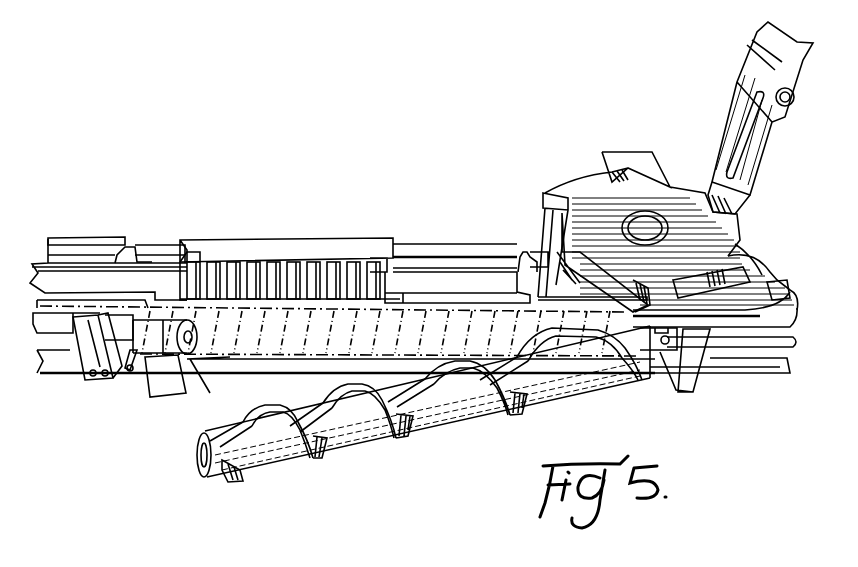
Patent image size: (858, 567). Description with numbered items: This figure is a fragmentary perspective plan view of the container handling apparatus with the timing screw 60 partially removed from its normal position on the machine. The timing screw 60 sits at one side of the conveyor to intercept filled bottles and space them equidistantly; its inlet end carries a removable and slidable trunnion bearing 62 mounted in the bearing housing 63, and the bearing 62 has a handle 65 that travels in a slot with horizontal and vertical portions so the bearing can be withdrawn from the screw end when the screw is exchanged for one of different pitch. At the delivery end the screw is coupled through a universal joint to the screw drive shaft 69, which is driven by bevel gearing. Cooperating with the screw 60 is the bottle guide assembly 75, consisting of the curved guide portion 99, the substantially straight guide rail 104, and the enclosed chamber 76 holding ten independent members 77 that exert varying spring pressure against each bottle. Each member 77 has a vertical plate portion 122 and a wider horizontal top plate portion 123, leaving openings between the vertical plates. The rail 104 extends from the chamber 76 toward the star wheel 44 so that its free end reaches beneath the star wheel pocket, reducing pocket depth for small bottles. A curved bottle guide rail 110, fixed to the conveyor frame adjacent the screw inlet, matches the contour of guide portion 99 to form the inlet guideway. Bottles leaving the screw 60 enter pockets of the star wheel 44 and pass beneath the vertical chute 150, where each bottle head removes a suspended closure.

The bottle guide assembly 75 is at (49, 273).
The curved guide portion 99 is at (86, 270).
The vertical plate portion 122 is at (190, 285).
The independent members 77 is at (200, 260).
The horizontal top plate portion 123 is at (258, 260).
The enclosed chamber 76 is at (300, 245).
The guide rail 104 is at (479, 289).
The star wheel 44 is at (699, 237).
The vertical chute 150 is at (758, 161).
The curved bottle guide rail 110 is at (66, 328).
The trunnion bearing 62 is at (113, 337).
The bearing housing 63 is at (159, 345).
The handle 65 is at (143, 365).
The timing screw 60 is at (596, 344).
The screw drive shaft 69 is at (796, 343).